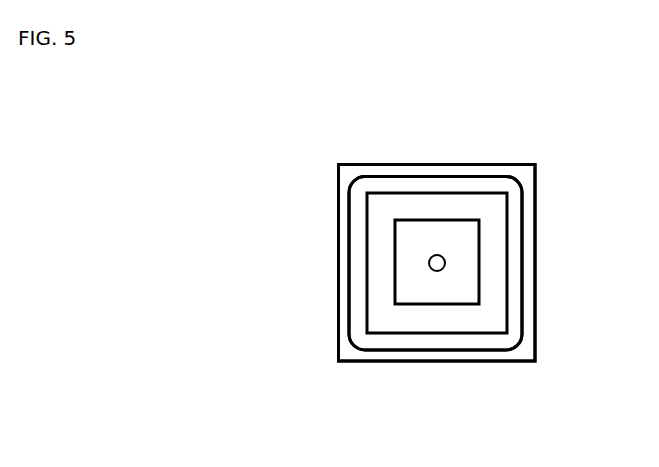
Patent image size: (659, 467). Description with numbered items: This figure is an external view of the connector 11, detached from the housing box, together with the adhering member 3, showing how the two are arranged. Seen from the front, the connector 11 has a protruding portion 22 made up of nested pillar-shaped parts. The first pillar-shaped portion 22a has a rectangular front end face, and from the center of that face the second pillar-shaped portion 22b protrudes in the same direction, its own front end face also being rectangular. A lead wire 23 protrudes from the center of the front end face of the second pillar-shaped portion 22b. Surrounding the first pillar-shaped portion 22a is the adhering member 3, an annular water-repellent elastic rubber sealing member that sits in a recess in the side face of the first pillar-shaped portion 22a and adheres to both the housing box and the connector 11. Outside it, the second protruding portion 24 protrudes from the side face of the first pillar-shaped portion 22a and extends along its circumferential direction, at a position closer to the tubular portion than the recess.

The connector 11 is at (503, 140).
The second protruding portion 24 is at (530, 345).
The protruding portion 22 is at (511, 290).
The adhering member 3 is at (513, 250).
The first pillar-shaped portion 22a is at (490, 212).
The second pillar-shaped portion 22b is at (455, 292).
The lead wire 23 is at (434, 272).